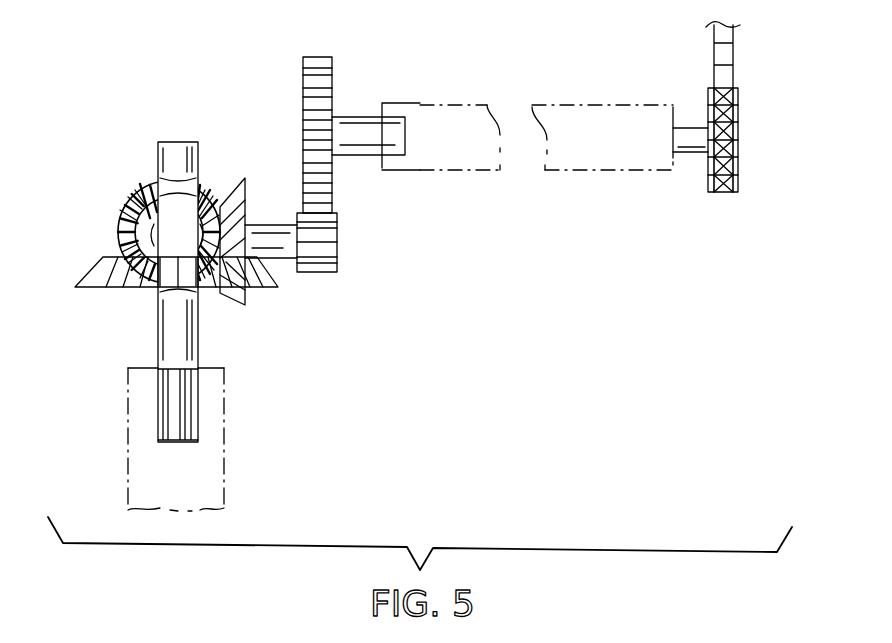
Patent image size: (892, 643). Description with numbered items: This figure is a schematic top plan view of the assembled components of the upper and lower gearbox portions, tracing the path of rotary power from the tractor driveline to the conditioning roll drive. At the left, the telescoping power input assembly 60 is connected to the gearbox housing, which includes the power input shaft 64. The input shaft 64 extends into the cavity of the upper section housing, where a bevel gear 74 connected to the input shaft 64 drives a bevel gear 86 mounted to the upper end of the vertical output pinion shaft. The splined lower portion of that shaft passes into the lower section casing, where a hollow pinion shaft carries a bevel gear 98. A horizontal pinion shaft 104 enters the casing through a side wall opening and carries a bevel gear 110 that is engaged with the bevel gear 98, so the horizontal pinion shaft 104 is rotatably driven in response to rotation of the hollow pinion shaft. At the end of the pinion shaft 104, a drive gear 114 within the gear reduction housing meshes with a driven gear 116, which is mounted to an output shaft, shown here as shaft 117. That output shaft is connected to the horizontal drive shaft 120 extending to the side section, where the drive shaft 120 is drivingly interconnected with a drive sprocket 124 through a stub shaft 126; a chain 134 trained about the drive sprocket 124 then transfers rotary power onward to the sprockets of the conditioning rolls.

The telescoping power input assembly 60 is at (108, 433).
The power input shaft 64 is at (158, 305).
The bevel gear 74 is at (93, 268).
The bevel gear 86 is at (123, 218).
The bevel gear 98 is at (134, 192).
The horizontal pinion shaft 104 is at (270, 225).
The bevel gear 110 is at (228, 183).
The drive gear 114 is at (315, 272).
The driven gear 116 is at (302, 88).
The shaft 117 is at (345, 117).
The horizontal drive shaft 120 is at (432, 105).
The drive sprocket 124 is at (738, 148).
The stub shaft 126 is at (690, 155).
The chain 134 is at (714, 55).